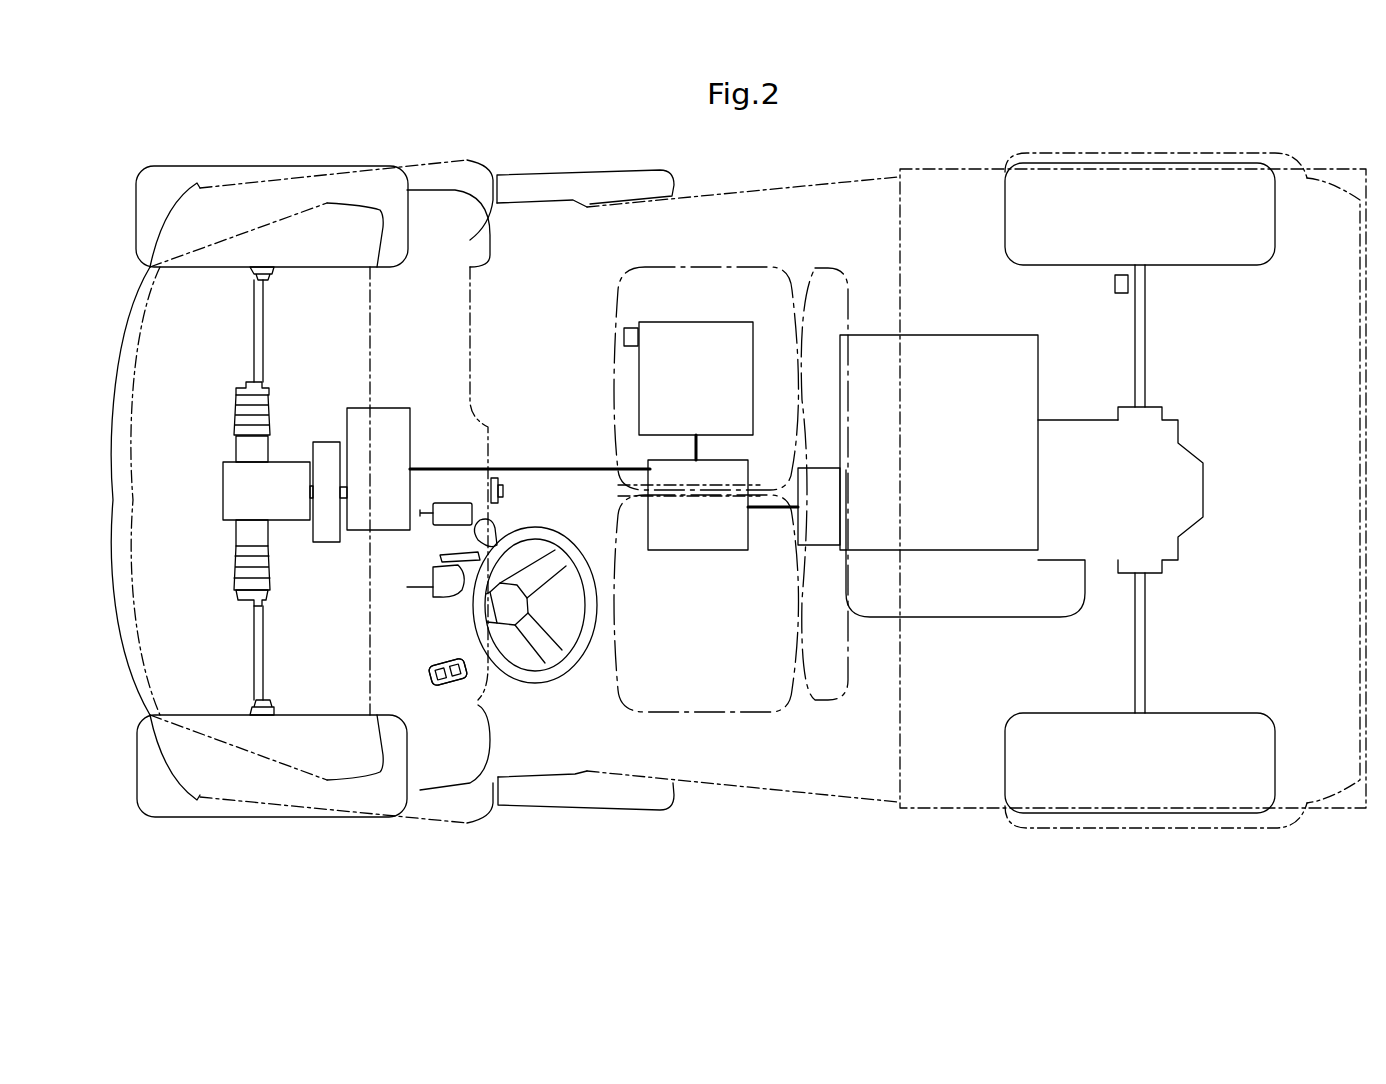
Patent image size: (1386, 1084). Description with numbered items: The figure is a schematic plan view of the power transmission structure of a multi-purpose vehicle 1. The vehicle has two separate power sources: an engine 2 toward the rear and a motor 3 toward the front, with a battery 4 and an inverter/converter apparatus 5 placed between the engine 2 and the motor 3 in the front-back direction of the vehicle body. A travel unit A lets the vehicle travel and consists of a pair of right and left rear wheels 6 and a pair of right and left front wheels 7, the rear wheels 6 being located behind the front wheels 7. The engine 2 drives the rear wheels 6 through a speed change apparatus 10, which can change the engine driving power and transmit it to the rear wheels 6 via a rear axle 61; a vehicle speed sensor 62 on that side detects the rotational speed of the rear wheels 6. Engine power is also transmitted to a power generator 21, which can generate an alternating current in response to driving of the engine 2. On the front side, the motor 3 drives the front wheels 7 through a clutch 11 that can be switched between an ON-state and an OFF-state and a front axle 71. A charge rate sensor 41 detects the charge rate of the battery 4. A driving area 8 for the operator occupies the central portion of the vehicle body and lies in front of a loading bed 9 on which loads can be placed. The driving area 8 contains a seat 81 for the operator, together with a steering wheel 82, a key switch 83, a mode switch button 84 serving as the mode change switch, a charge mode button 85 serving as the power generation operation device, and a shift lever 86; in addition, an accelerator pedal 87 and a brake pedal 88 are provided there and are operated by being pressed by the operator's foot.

The multi-purpose vehicle 1 is at (158, 130).
The engine 2 is at (945, 340).
The motor 3 is at (388, 412).
The battery 4 is at (698, 322).
The inverter/converter apparatus 5 is at (693, 548).
The rear wheels 6 is at (1012, 222).
The front wheels 7 is at (207, 176).
The driving area 8 is at (553, 738).
The loading bed 9 is at (975, 168).
The speed change apparatus 10 is at (1197, 490).
The clutch 11 is at (327, 442).
The power generator 21 is at (818, 470).
The charge rate sensor 41 is at (624, 338).
The rear axle 61 is at (1146, 346).
The vehicle speed sensor 62 is at (1113, 286).
The front axle 71 is at (260, 328).
The seat 81 is at (740, 267).
The steering wheel 82 is at (548, 680).
The key switch 83 is at (503, 490).
The mode switch button 84 is at (436, 665).
The charge mode button 85 is at (466, 676).
The shift lever 86 is at (470, 531).
The accelerator pedal 87 is at (453, 504).
The brake pedal 88 is at (452, 590).
The travel unit A is at (248, 845).